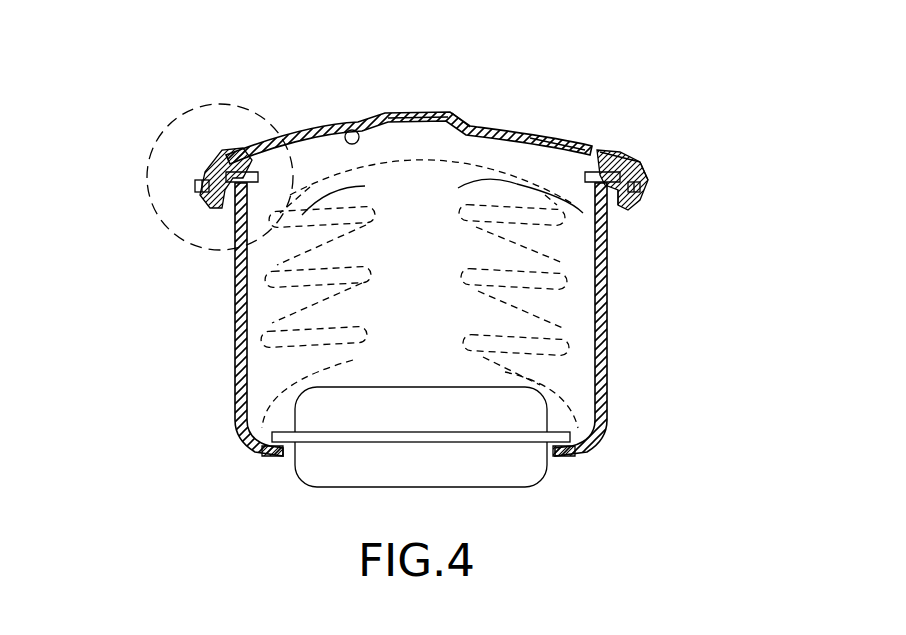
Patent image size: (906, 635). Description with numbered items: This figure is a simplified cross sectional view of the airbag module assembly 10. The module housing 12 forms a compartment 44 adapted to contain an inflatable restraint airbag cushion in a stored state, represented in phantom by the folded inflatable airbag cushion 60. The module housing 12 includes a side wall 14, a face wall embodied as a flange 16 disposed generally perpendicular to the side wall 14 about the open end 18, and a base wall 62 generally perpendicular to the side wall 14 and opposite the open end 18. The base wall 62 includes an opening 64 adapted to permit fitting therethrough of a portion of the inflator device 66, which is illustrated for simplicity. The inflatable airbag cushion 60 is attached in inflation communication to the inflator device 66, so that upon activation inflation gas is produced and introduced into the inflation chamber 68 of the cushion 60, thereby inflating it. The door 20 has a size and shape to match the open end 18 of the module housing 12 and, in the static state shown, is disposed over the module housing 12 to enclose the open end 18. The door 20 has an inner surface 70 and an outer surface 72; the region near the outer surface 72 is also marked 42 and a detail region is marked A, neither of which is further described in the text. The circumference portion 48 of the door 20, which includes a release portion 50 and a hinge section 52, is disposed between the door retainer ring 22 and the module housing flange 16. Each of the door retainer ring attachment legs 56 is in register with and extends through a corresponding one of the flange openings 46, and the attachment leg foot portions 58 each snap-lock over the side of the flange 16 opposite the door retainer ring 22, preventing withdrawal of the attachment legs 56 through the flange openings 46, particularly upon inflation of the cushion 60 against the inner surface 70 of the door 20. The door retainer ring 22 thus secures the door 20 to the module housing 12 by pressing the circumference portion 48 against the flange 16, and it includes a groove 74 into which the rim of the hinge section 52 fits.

The airbag module assembly 10 is at (639, 51).
The module housing 12 is at (607, 318).
The side wall 14 is at (235, 392).
The flange 16 is at (198, 186).
The open end 18 is at (572, 188).
The door 20 is at (308, 122).
The door retainer ring 22 is at (614, 144).
The lid top 42 is at (408, 113).
The compartment 44 is at (582, 388).
The flange openings 46 is at (506, 302).
The circumference portion 48 is at (305, 214).
The release portion 50 is at (238, 148).
The hinge section 52 is at (642, 172).
The attachment legs 56 is at (612, 212).
The foot portions 58 is at (625, 210).
The folded inflatable airbag cushion 60 is at (282, 336).
The base wall 62 is at (568, 458).
The opening 64 is at (282, 460).
The inflator device 66 is at (527, 470).
The inflation chamber 68 is at (434, 333).
The inner surface 70 is at (350, 122).
The outer surface 72 is at (470, 116).
The groove 74 is at (620, 148).
The detail A is at (152, 225).